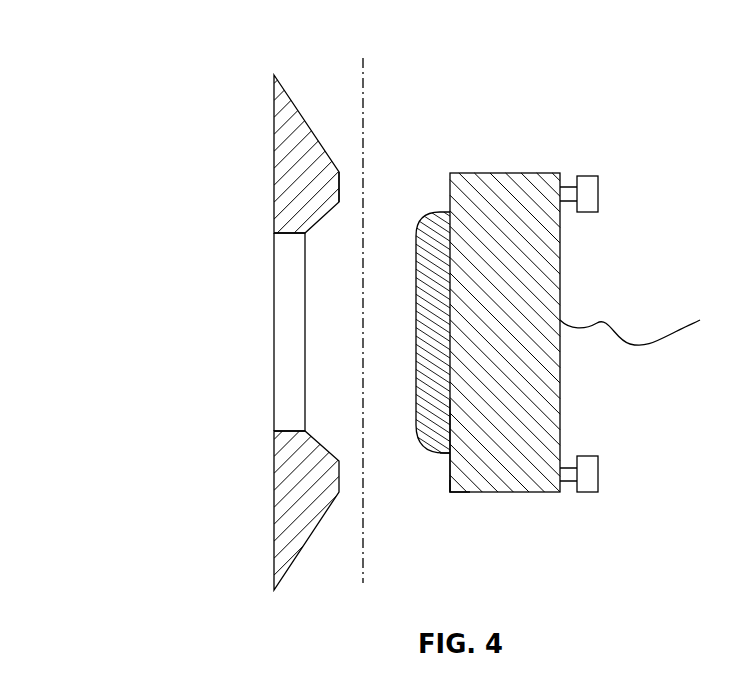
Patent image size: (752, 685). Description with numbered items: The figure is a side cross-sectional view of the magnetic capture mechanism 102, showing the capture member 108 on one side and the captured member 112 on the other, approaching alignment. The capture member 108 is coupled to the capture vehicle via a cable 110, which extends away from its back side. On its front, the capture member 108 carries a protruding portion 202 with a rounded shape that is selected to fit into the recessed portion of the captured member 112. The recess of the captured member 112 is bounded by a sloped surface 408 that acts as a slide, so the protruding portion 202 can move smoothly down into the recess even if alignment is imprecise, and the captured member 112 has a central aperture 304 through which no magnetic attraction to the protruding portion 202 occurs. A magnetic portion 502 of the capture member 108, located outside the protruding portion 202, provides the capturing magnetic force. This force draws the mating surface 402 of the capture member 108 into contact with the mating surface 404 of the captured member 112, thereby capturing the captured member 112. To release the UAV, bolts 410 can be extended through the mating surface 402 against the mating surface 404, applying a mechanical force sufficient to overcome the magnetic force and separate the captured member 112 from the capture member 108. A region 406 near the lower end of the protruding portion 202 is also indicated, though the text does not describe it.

The magnetic capture mechanism 102 is at (283, 48).
The captured member 112 is at (274, 160).
The mating surface of the captured member 404 is at (342, 188).
The central aperture 304 is at (353, 344).
The surface 408 is at (330, 443).
The capture member 108 is at (523, 172).
The protruding portion 202 is at (428, 292).
The cable 110 is at (640, 343).
The magnetic portion 502 is at (467, 452).
The cushion lower edge 406 is at (438, 458).
The mating surface of the capture member 402 is at (446, 491).
The bolts 410 is at (597, 471).